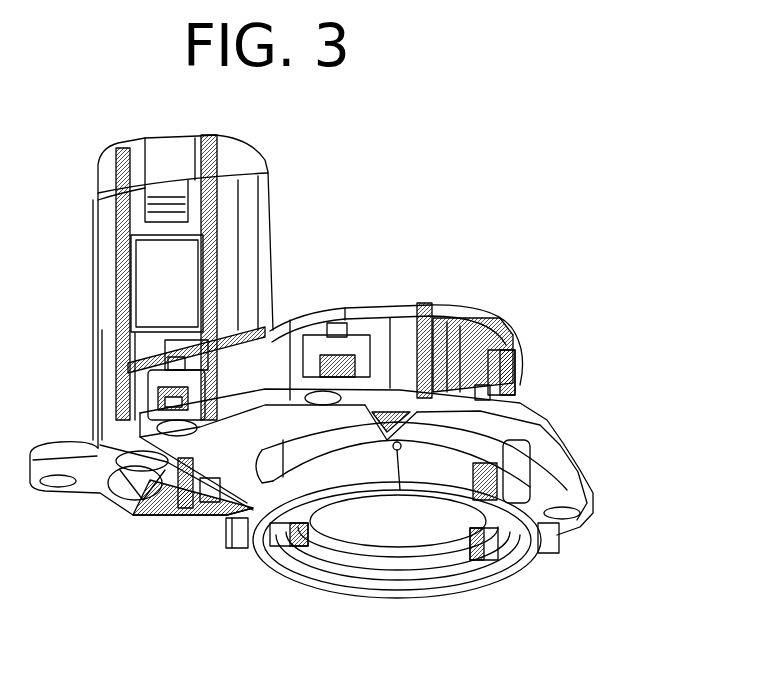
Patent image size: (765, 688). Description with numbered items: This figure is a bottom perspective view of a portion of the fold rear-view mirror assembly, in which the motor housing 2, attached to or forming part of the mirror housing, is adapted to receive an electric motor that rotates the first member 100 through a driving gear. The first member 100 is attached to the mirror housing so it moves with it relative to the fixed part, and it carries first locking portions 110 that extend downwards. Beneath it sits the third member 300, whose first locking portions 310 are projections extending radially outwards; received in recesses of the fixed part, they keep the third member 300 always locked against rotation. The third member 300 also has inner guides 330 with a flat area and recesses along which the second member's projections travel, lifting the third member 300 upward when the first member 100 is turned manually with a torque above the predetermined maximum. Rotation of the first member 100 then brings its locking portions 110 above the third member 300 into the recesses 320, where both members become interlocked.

The motor housing 2 is at (265, 204).
The first member 100 is at (586, 381).
The first locking portions 110 is at (417, 404).
The third member 300 is at (507, 587).
The first locking portions 310 is at (233, 550).
The recesses 320 is at (398, 450).
The inner guides 330 is at (333, 568).